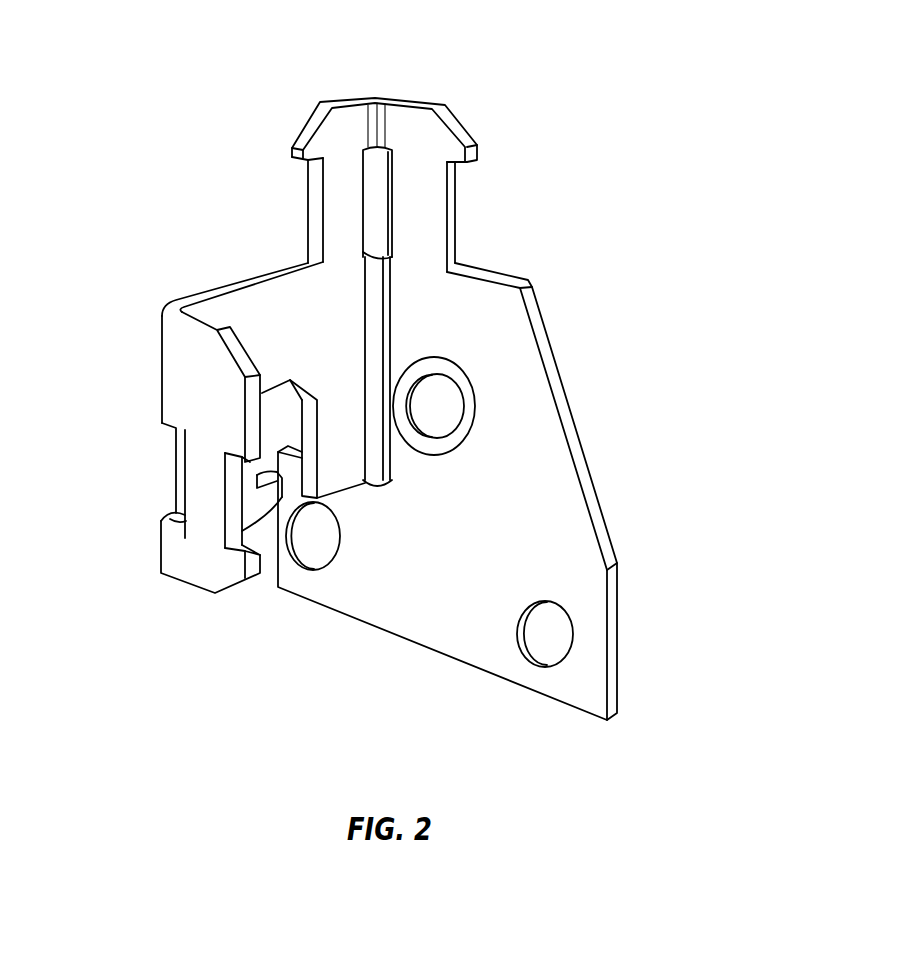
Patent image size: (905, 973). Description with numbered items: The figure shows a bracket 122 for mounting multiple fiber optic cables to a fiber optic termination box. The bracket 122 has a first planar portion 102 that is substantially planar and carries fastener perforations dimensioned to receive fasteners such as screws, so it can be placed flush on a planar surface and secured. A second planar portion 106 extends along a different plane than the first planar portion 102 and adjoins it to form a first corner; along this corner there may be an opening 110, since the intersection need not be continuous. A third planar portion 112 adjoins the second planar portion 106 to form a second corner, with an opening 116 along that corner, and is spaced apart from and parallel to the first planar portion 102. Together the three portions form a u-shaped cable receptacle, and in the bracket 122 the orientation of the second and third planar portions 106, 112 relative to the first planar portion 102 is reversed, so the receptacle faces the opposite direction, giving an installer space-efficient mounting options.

The first planar portion 102 is at (470, 325).
The second planar portion 106 is at (253, 302).
The opening 110 is at (378, 207).
The third planar portion 112 is at (203, 375).
The opening 116 is at (157, 468).
The bracket 122 is at (498, 77).